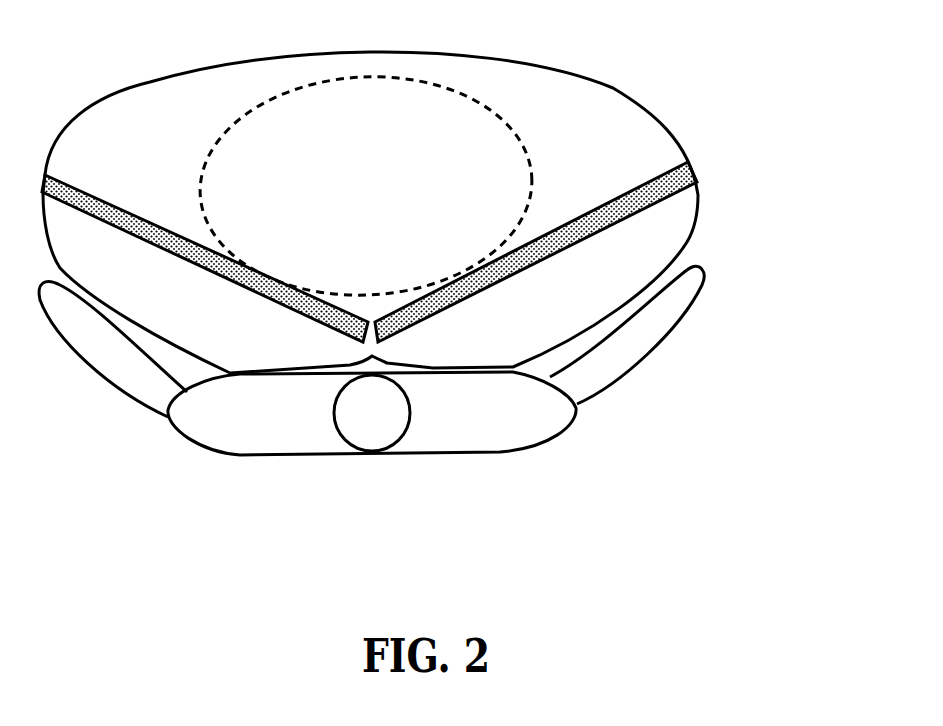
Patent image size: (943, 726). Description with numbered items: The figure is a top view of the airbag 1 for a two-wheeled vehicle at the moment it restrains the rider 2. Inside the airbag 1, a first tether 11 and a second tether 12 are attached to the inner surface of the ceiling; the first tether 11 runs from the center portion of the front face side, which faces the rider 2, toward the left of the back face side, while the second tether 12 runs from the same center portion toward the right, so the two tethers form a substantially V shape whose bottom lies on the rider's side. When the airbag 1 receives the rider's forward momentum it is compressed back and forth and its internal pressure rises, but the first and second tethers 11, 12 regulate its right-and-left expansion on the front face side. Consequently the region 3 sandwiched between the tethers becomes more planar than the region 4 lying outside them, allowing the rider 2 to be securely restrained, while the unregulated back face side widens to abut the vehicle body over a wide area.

The airbag 1 is at (716, 197).
The rider 2 is at (538, 461).
The region 3 is at (376, 193).
The region 4 is at (251, 355).
The first tether 11 is at (200, 267).
The second tether 12 is at (536, 257).